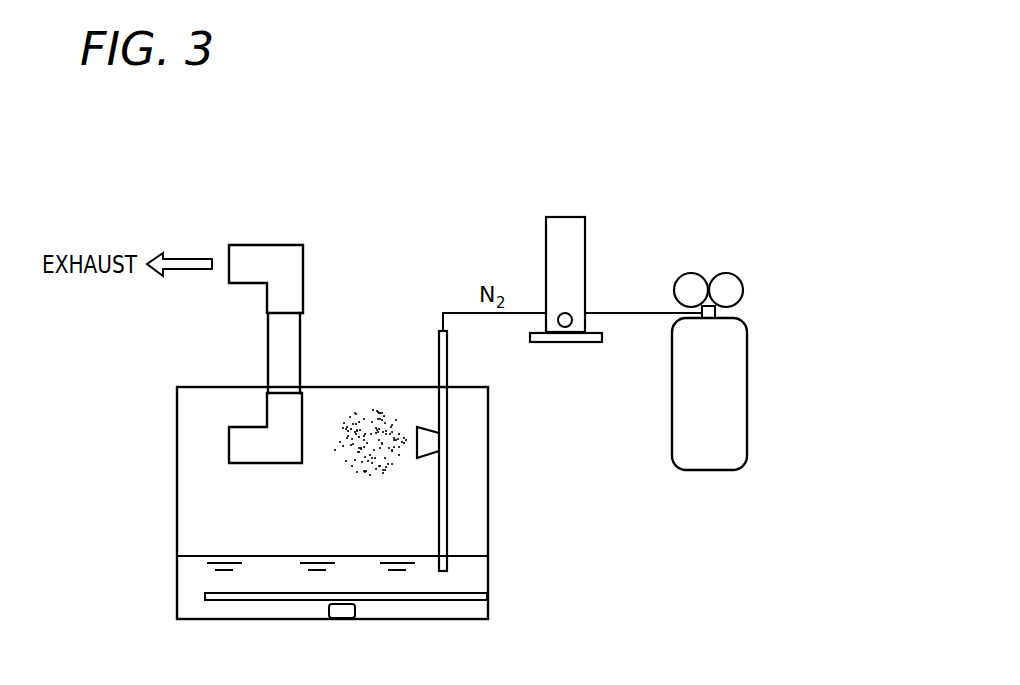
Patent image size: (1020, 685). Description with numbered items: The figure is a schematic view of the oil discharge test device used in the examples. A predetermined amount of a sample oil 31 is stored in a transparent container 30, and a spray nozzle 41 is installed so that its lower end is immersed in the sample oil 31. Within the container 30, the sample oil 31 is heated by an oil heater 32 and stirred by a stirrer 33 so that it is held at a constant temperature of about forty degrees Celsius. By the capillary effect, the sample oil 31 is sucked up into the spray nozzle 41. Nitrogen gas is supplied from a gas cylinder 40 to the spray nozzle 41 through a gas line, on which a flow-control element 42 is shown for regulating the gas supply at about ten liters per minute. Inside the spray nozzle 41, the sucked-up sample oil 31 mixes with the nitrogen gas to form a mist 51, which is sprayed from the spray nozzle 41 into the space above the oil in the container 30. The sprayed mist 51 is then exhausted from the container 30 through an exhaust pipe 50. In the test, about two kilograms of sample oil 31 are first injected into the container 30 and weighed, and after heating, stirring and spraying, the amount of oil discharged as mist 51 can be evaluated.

The container 30 is at (177, 432).
The sample oil 31 is at (473, 573).
The oil heater 32 is at (485, 596).
The stirrer 33 is at (355, 609).
The gas cylinder 40 is at (738, 389).
The spray nozzle 41 is at (447, 508).
The valve 42 is at (560, 345).
The exhaust pipe 50 is at (253, 245).
The mist 51 is at (351, 409).